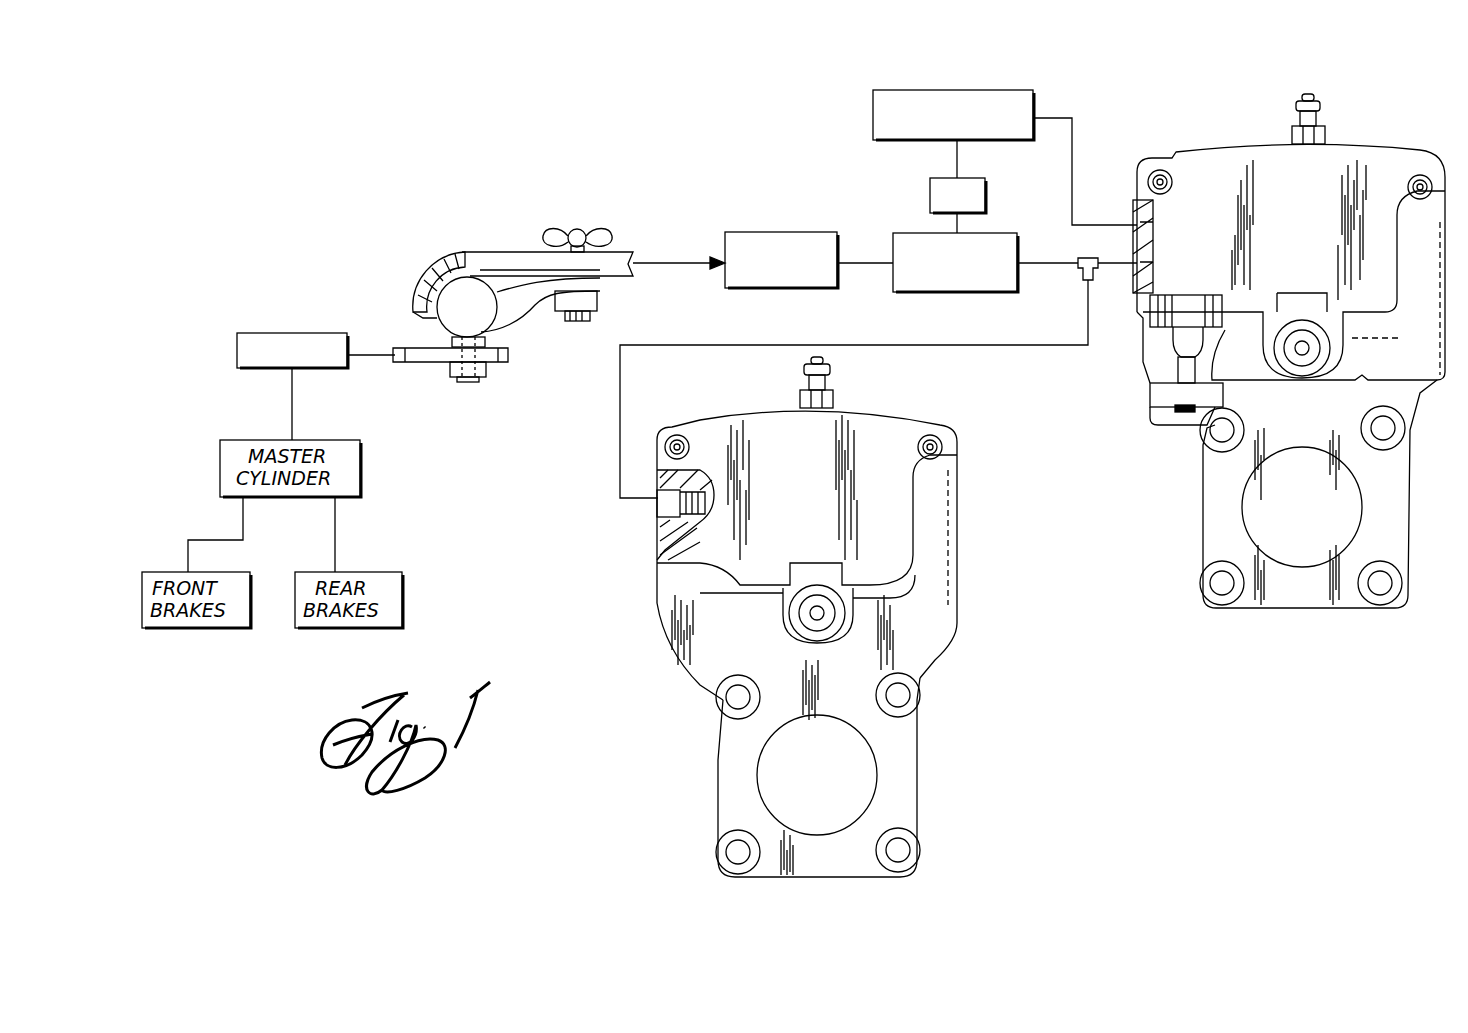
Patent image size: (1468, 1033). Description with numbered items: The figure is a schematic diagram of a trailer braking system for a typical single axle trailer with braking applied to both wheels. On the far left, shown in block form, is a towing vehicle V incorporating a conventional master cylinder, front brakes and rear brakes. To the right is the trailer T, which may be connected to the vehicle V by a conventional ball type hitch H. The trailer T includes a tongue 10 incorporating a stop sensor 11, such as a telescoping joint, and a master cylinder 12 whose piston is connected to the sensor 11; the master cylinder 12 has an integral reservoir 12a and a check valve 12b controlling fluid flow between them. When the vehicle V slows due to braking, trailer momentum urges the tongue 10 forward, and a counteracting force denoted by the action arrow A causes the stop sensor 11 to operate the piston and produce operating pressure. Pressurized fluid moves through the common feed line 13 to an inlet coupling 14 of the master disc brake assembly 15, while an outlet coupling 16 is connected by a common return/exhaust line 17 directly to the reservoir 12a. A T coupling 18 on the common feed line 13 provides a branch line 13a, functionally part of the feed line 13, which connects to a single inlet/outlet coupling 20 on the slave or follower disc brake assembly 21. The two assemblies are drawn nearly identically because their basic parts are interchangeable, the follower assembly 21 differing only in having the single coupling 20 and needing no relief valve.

The ball type hitch H is at (476, 214).
The action arrow A is at (667, 262).
The vehicle V is at (256, 340).
The tongue 10 is at (623, 277).
The stop sensor 11 is at (749, 233).
The master cylinder 12 is at (938, 292).
The reservoir 12a is at (927, 88).
The check valve 12b is at (985, 196).
The common feed line 13 is at (1050, 268).
The branch line 13a is at (982, 352).
The inlet coupling 14 is at (1133, 272).
The master disc brake assembly 15 is at (1263, 324).
The outlet coupling 16 is at (1135, 225).
The common return/exhaust line 17 is at (1072, 140).
The T coupling 18 is at (1088, 257).
The inlet/outlet coupling 20 is at (660, 507).
The slave or follower disc brake assembly 21 is at (809, 617).
The trailer T is at (1070, 576).